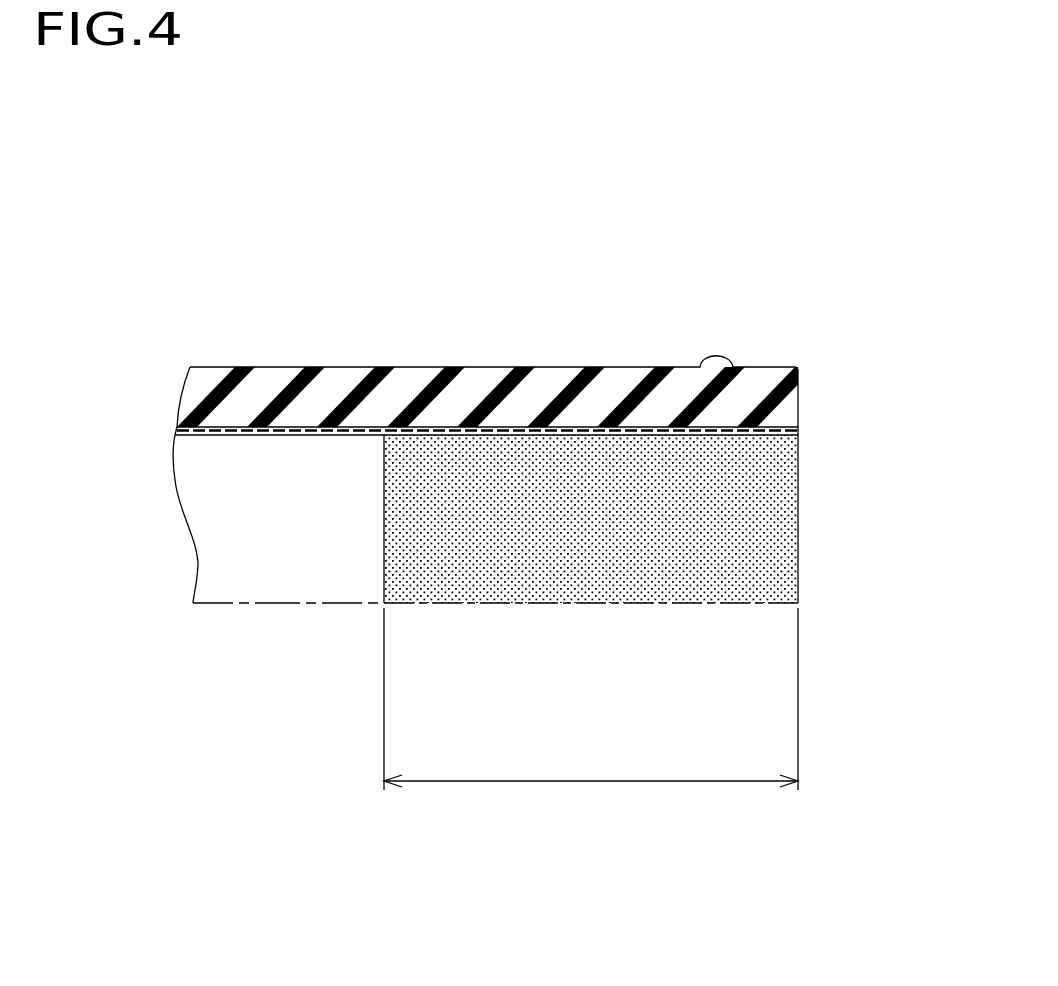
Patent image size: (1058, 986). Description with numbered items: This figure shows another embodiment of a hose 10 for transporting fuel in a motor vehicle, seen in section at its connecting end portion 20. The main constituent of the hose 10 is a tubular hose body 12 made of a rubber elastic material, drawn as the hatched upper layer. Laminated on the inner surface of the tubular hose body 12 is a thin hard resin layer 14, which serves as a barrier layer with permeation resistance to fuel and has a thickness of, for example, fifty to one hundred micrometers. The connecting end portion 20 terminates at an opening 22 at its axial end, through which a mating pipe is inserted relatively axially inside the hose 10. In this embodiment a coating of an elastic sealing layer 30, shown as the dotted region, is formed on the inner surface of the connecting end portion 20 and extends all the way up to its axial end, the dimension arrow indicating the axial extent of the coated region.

The hose 10 is at (485, 243).
The tubular hose body 12 is at (407, 367).
The resin layer 14 is at (290, 432).
The connecting end portion 20 is at (622, 388).
The opening 22 is at (767, 434).
The elastic sealing layer 30 is at (402, 574).